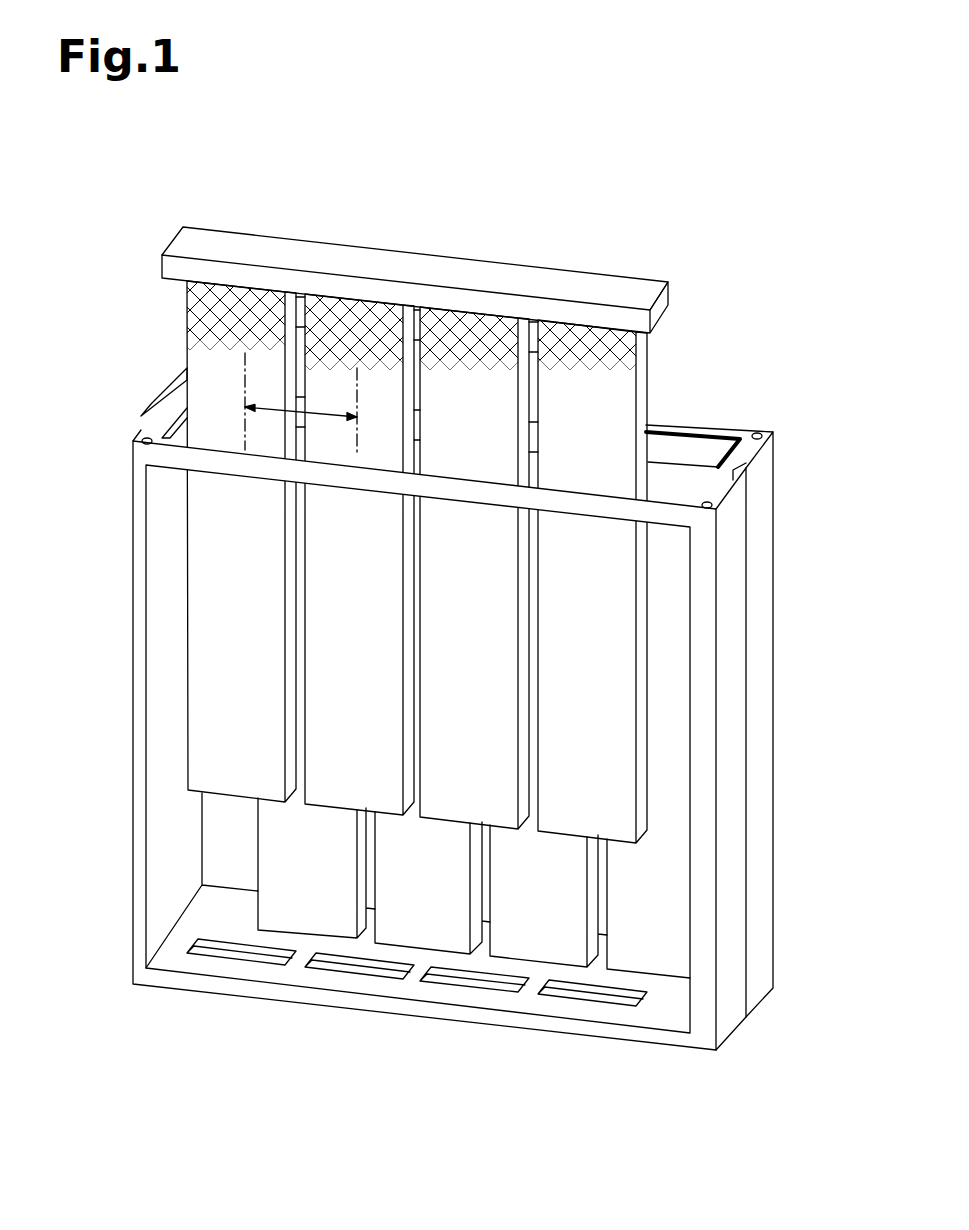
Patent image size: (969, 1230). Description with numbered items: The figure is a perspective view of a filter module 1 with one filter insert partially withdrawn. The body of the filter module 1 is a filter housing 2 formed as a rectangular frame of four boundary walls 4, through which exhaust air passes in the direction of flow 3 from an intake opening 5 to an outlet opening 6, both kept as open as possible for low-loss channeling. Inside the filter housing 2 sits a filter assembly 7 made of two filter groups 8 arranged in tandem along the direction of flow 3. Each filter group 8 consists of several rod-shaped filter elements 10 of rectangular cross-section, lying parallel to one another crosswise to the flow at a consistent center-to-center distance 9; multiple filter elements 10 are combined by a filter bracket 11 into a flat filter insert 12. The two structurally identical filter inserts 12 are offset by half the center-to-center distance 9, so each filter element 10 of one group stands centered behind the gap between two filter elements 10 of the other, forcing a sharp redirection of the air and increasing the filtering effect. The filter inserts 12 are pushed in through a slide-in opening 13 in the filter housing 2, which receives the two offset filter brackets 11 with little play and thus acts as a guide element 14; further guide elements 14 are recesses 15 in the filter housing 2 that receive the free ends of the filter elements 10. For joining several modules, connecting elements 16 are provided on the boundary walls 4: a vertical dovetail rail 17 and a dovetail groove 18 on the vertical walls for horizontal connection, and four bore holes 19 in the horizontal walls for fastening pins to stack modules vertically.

The filter module 1 is at (640, 172).
The filter housing 2 is at (762, 600).
The direction of flow 3 is at (466, 673).
The boundary wall 4 is at (175, 393).
The intake opening 5 is at (656, 395).
The outlet opening 6 is at (218, 1005).
The filter assembly 7 is at (486, 744).
The filter group 8 is at (328, 383).
The center-to-center distance 9 is at (278, 403).
The filter element 10 is at (577, 387).
The filter bracket 11 is at (205, 243).
The filter insert 12 is at (258, 256).
The slide-in opening 13 is at (175, 428).
The guide element 14 is at (735, 423).
The recess 15 is at (192, 957).
The connecting element 16 is at (453, 433).
The dovetail rail 17 is at (150, 400).
The dovetail groove 18 is at (745, 530).
The bore hole 19 is at (133, 438).